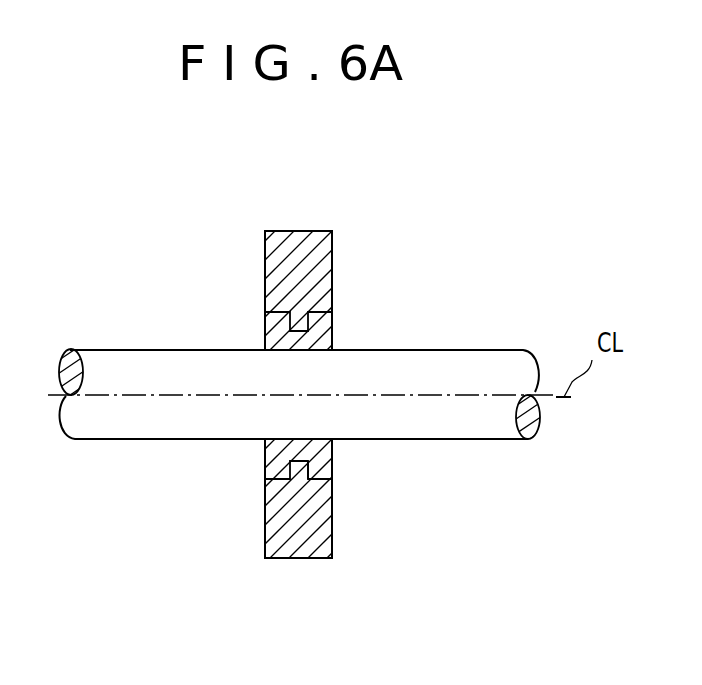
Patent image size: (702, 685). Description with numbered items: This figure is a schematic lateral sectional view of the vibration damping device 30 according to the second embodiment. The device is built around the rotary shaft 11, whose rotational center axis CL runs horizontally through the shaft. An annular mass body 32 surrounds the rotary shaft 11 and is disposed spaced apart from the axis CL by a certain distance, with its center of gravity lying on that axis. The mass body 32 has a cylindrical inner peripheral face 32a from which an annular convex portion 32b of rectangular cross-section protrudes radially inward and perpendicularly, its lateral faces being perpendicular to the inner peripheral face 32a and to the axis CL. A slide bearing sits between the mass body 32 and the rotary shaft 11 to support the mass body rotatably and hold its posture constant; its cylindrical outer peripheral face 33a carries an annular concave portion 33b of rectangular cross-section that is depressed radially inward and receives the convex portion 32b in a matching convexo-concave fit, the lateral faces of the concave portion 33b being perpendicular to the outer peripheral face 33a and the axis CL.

The rotary shaft 11 is at (447, 350).
The vibration damping device 30 is at (340, 355).
The mass body 32 is at (315, 231).
The inner peripheral face 32a is at (333, 313).
The convex portion 32b is at (265, 325).
The outer peripheral face 33a is at (272, 309).
The concave portion 33b is at (316, 322).